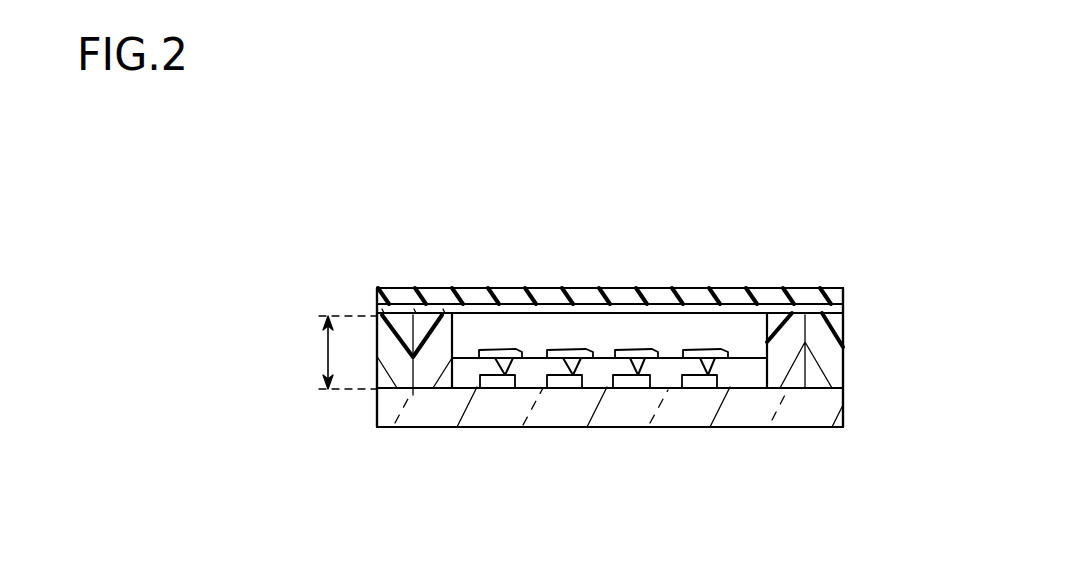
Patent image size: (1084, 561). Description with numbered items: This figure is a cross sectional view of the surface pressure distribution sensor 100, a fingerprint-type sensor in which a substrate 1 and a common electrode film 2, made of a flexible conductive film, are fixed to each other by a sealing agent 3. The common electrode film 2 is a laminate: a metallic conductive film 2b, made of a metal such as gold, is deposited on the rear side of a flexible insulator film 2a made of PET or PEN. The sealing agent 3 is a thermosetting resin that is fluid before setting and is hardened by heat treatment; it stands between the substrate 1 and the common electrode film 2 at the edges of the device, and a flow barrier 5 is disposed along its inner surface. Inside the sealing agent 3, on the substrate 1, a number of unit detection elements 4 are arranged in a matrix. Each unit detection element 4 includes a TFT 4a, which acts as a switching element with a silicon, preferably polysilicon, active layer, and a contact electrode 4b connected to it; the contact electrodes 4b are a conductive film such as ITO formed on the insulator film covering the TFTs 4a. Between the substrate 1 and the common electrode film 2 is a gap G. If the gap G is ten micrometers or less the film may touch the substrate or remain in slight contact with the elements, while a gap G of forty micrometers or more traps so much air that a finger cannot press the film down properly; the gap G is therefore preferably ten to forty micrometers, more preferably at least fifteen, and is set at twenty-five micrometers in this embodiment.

The surface pressure distribution sensor 100 is at (478, 203).
The common electrode film 2 is at (610, 233).
The flexible insulator film 2a is at (625, 285).
The metallic conductive film 2b is at (690, 285).
The sealing agent 3 is at (835, 360).
The flow barrier 5 is at (790, 340).
The substrate 1 is at (838, 407).
The unit detection element 4 is at (609, 446).
The TFT 4a is at (498, 390).
The contact electrode 4b is at (578, 418).
The gap G is at (333, 352).